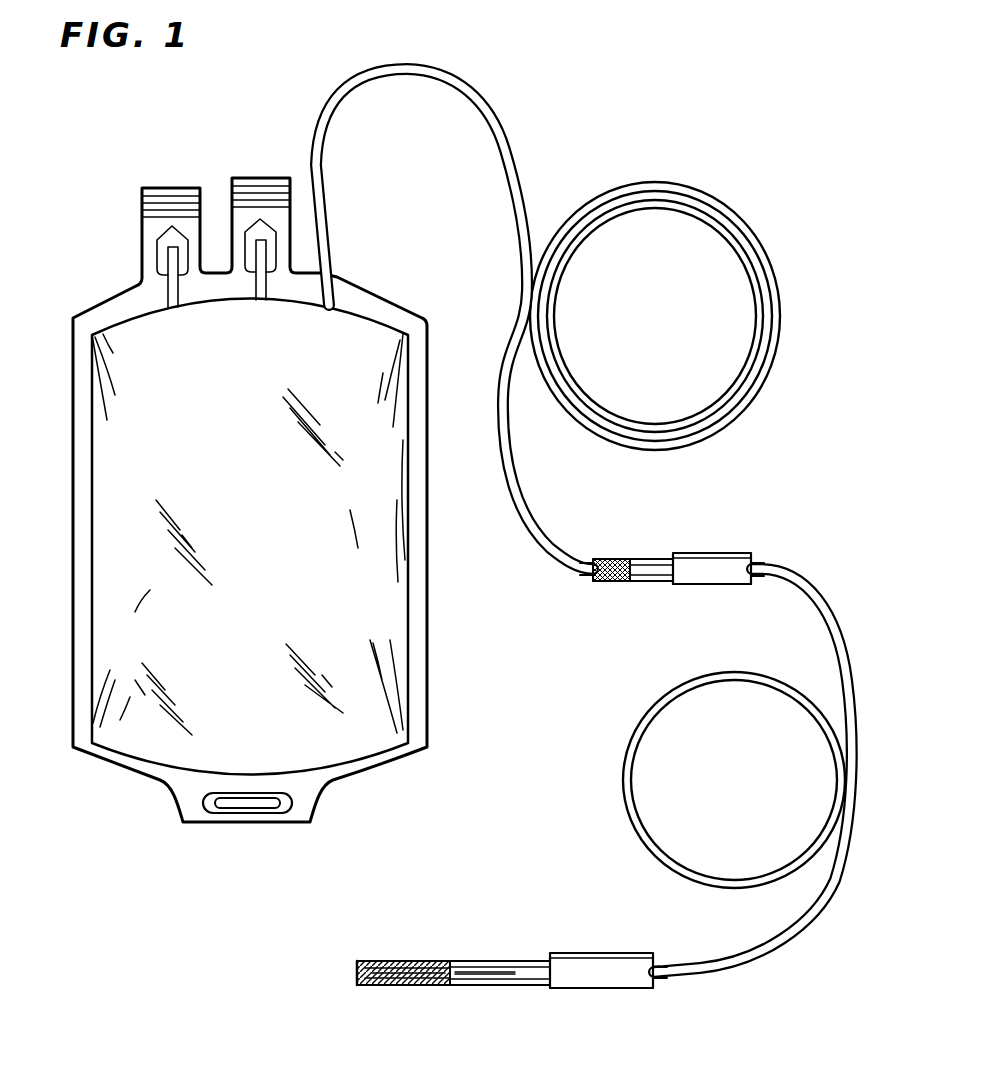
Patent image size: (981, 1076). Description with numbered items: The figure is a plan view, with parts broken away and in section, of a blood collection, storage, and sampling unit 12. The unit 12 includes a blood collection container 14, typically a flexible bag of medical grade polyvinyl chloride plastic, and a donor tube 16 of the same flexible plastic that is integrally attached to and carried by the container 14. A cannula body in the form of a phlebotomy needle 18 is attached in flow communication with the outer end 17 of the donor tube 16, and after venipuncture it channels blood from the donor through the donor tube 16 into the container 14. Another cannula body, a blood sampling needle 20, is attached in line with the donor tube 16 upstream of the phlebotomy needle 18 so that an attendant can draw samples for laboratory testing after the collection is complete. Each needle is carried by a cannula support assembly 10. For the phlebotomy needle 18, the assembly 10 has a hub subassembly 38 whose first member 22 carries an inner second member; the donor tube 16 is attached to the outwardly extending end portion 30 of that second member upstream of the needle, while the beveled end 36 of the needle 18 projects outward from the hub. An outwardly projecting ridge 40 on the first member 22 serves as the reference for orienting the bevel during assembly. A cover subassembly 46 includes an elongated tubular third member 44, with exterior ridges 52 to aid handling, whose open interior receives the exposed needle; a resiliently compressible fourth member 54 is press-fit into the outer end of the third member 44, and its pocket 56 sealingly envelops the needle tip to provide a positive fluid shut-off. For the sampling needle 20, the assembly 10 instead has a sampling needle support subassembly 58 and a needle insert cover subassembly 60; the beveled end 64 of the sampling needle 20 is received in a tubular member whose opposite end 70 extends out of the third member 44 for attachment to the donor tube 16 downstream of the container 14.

The cannula support assembly 10 is at (720, 500).
The blood collection, storage, and sampling unit 12 is at (78, 275).
The blood collection container 14 is at (126, 588).
The donor tube 16 is at (499, 125).
The outer end 17 is at (665, 985).
The phlebotomy needle 18 is at (446, 986).
The blood sampling needle 20 is at (620, 582).
The first member 22 is at (727, 577).
The end portion 30 is at (761, 566).
The beveled end 36 is at (385, 986).
The hub subassembly 38 is at (626, 1006).
The ridge 40 is at (713, 553).
The third member 44 is at (648, 571).
The cover subassembly 46 is at (455, 949).
The ridges 52 is at (500, 963).
The fourth member 54 is at (357, 986).
The pocket 56 is at (372, 961).
The sampling needle support subassembly 58 is at (710, 592).
The cover subassembly 60 is at (660, 592).
The beveled end 64 is at (603, 559).
The opposite end 70 is at (588, 577).